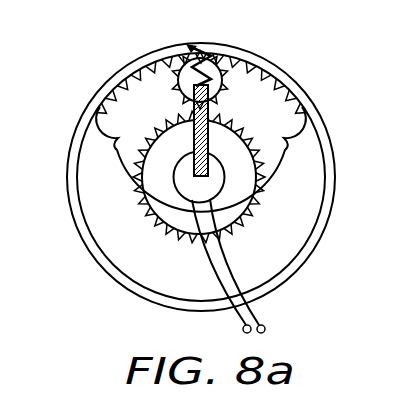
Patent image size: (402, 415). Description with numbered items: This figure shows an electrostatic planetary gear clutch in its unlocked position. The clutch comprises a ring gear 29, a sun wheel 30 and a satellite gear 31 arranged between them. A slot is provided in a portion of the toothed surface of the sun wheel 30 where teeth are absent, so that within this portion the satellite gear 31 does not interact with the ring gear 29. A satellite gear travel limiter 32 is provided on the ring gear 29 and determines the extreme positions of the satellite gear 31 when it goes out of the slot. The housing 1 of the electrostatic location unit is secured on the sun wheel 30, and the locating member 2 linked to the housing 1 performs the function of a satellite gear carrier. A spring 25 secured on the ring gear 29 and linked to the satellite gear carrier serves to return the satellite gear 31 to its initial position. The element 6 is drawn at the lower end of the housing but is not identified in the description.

The housing 1 is at (217, 189).
The locating member 2 is at (172, 97).
The tubes 6 is at (238, 272).
The spring 25 is at (190, 52).
The ring gear 29 is at (123, 72).
The sun wheel 30 is at (160, 236).
The satellite gear 31 is at (214, 78).
The satellite gear travel limiter 32 is at (303, 147).